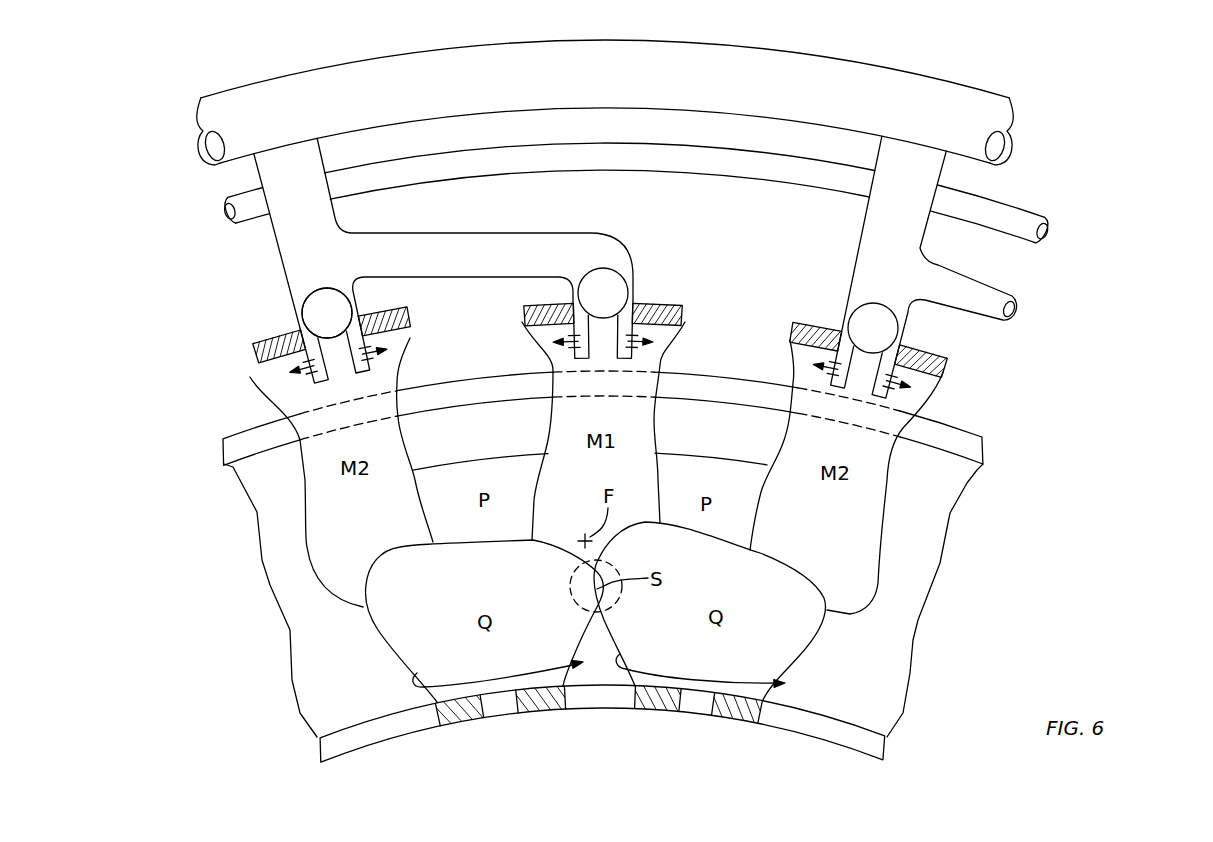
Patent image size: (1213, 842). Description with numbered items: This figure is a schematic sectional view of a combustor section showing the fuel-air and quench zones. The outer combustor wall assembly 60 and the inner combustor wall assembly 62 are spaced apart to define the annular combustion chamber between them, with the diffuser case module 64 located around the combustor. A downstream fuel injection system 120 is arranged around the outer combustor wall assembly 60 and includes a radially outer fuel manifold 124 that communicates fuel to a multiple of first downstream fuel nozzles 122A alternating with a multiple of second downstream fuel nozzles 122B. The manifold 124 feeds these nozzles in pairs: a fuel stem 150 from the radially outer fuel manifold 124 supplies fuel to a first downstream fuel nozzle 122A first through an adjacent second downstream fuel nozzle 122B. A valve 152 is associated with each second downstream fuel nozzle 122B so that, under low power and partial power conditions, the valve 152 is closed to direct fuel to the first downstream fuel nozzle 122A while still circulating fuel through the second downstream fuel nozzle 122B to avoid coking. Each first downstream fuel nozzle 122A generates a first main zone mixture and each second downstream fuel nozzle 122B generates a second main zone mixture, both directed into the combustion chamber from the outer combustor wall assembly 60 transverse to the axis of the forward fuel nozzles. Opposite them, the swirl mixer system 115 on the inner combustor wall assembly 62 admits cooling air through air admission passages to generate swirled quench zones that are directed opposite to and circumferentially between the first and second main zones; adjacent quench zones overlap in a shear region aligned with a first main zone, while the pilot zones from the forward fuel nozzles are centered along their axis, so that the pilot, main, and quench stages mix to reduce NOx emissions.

The radially outer fuel manifold 124 is at (372, 86).
The diffuser case module 64 is at (633, 158).
The fuel stem 150 is at (332, 214).
The second downstream fuel nozzle 122B is at (278, 298).
The valve 152 is at (292, 318).
The first downstream fuel nozzle 122A is at (643, 270).
The downstream fuel injection system 120 is at (1035, 169).
The inner combustor wall assembly 62 is at (957, 443).
The swirl mixer system 115 is at (701, 727).
The outer combustor wall assembly 60 is at (822, 730).